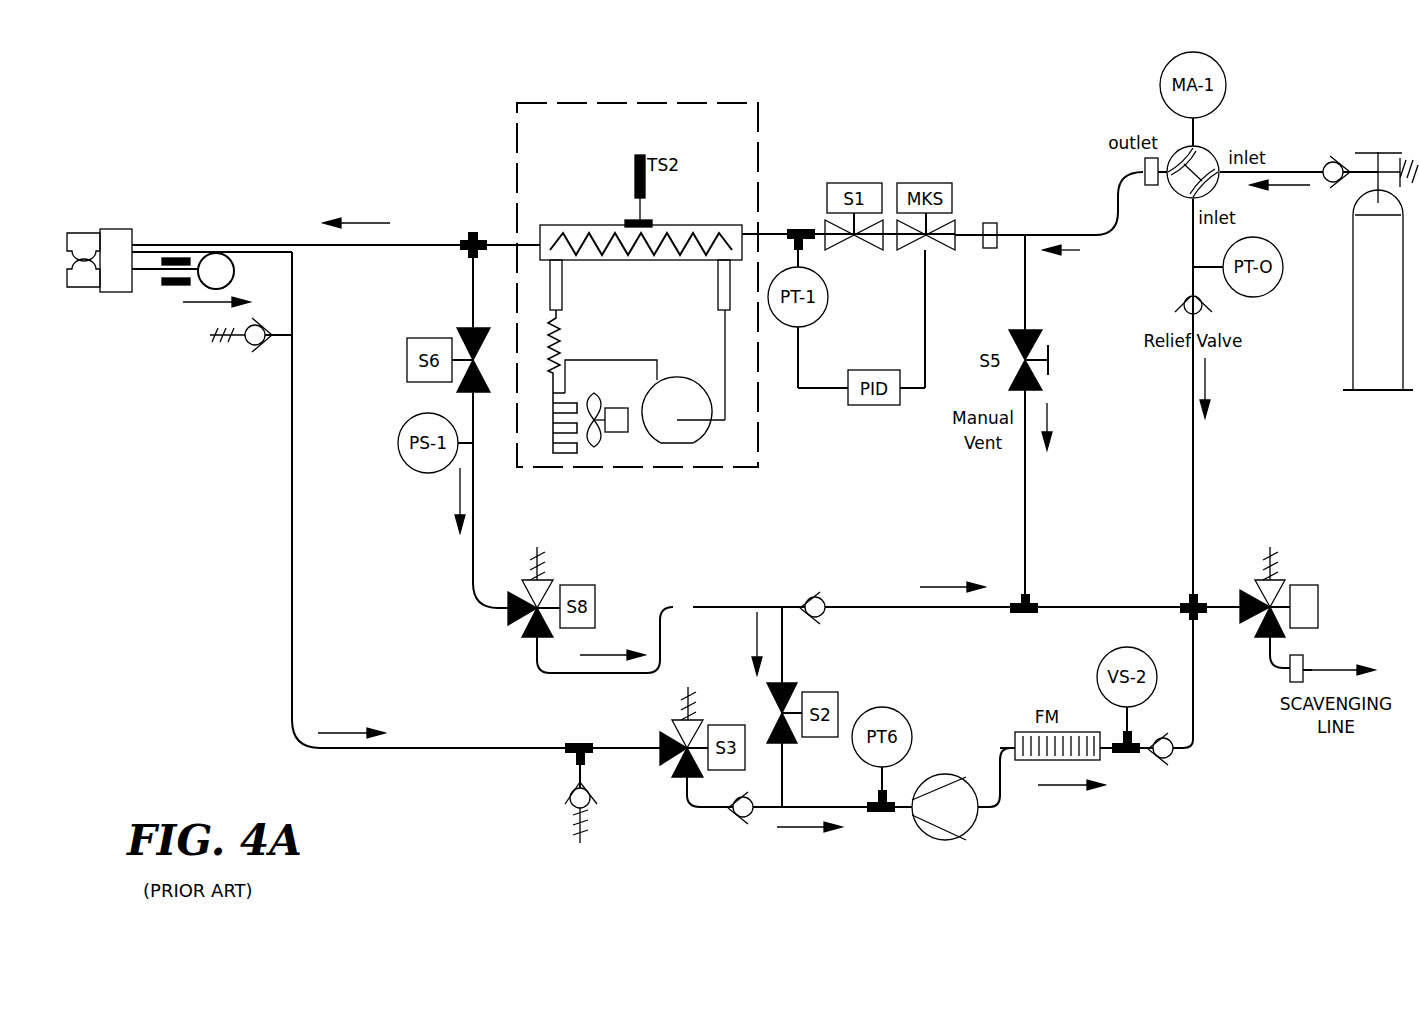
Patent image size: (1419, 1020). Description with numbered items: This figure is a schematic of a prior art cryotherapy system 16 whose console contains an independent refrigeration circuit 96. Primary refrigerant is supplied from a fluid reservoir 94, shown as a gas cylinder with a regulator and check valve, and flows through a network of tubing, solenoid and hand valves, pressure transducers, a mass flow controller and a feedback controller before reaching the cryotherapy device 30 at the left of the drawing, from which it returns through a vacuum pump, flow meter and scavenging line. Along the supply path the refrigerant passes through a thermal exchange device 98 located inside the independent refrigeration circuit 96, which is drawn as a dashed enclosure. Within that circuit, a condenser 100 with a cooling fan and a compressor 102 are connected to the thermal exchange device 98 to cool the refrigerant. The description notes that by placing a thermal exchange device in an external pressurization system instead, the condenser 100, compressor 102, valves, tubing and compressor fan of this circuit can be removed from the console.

The cryotherapy system 16 is at (957, 817).
The cryotherapy device 30 is at (112, 229).
The fluid reservoir 94 is at (1389, 301).
The independent refrigeration circuit 96 is at (569, 134).
The thermal exchange device 98 is at (585, 225).
The condenser 100 is at (553, 453).
The compressor 102 is at (670, 437).